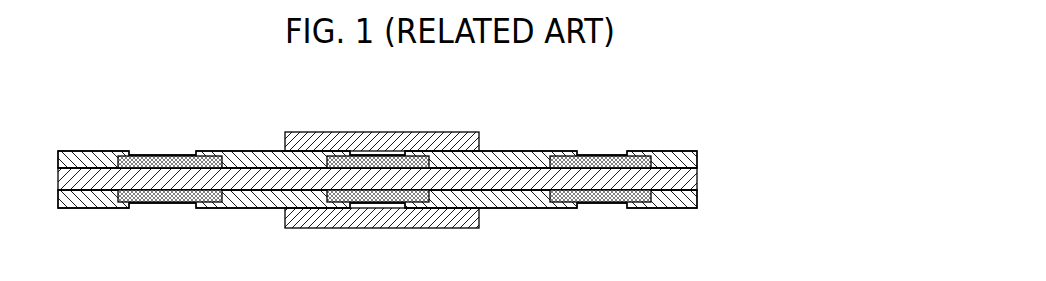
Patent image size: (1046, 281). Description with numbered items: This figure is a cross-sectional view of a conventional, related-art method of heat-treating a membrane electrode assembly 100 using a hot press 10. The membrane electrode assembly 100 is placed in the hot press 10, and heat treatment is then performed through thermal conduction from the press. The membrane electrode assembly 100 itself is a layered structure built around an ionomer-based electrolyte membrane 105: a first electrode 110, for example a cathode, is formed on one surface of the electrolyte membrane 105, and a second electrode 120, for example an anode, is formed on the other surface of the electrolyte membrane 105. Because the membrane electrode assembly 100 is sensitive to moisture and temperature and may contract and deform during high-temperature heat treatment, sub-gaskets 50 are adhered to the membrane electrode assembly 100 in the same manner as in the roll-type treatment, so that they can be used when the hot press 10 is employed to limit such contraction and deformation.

The hot press 10 is at (433, 138).
The sub-gasket 50 is at (510, 158).
The membrane electrode assembly 100 is at (453, 155).
The electrolyte membrane 105 is at (665, 177).
The first electrode 110 is at (647, 160).
The second electrode 120 is at (645, 197).